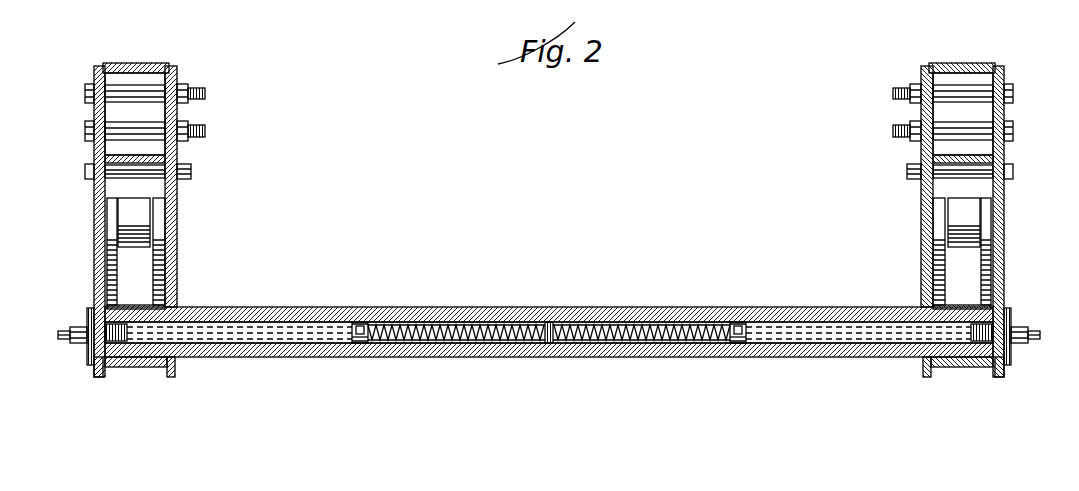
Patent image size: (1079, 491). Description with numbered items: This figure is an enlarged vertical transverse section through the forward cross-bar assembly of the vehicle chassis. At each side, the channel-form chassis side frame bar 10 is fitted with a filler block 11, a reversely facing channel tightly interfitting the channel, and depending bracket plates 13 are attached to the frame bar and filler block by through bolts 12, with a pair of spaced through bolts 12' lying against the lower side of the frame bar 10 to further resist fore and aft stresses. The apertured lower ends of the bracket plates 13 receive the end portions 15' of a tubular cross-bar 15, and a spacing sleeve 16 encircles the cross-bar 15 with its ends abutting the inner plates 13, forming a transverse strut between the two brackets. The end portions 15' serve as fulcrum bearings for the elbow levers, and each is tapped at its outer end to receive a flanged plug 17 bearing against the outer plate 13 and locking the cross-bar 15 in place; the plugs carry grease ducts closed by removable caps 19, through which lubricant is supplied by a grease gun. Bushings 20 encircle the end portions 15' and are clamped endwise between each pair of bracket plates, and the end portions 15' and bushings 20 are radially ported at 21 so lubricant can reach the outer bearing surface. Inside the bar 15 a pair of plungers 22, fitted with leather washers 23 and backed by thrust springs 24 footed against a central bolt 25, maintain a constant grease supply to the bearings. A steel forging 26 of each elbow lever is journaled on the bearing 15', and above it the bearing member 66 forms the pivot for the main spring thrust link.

The chassis side frame bar 10 is at (133, 63).
The filler blocks 11 is at (155, 68).
The through bolts 12 is at (549, 112).
The spaced through bolts 12' is at (549, 168).
The forward bracket plates 13 is at (95, 206).
The bearing member 66 is at (130, 212).
The steel forging 26 is at (107, 265).
The radial ports 21 is at (135, 309).
The flanged plugs 17 is at (89, 323).
The removable caps 19 is at (63, 333).
The bushings 20 is at (115, 368).
The end portions of the cross-bar 15' is at (549, 380).
The tubular cross-bar 15 is at (549, 322).
The spacing sleeve 16 is at (598, 315).
The plungers 22 is at (366, 343).
The leather washers 23 is at (356, 324).
The thrust springs 24 is at (442, 325).
The central bolt 25 is at (534, 325).